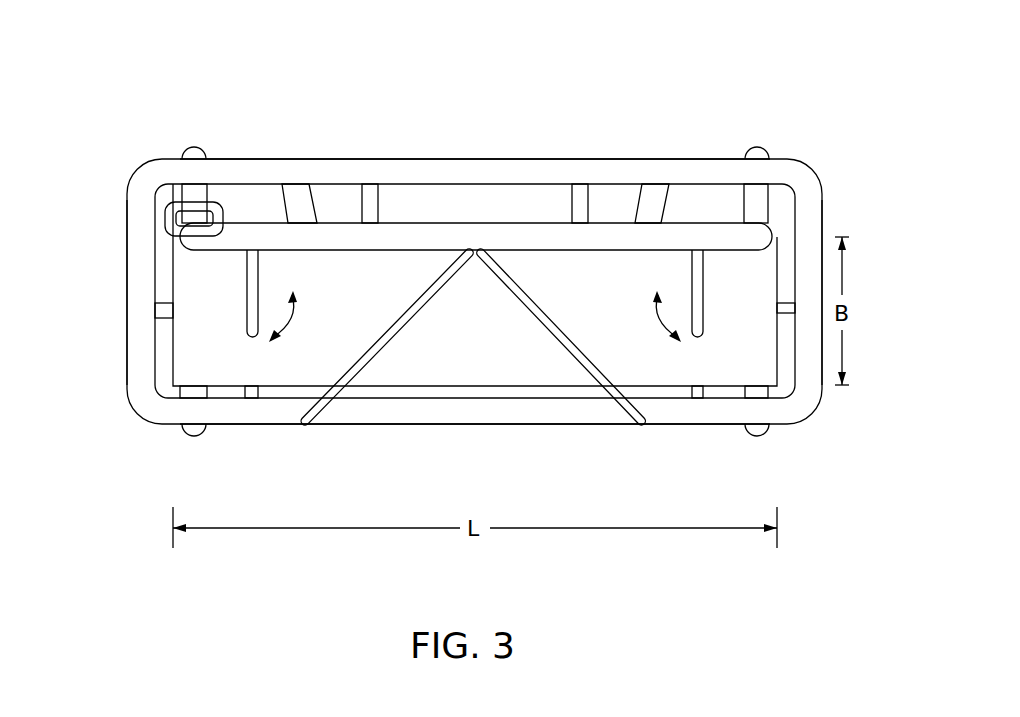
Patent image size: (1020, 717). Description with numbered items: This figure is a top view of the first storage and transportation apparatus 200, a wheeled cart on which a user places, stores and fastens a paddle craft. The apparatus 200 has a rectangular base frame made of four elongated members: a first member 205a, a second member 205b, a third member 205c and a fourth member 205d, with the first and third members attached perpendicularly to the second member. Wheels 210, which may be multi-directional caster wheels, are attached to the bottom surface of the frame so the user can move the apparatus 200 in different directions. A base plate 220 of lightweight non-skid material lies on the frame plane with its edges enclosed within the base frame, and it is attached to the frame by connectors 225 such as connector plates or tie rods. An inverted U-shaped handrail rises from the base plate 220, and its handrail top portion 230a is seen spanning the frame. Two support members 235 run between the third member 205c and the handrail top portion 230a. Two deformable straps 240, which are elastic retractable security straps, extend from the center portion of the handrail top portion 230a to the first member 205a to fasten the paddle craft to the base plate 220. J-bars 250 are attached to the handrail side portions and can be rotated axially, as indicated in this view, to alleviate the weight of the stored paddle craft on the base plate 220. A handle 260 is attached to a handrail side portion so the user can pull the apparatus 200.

The first storage and transportation apparatus 200 is at (140, 65).
The first member 205a is at (420, 424).
The second member 205b is at (822, 222).
The third member 205c is at (478, 158).
The fourth member 205d is at (127, 248).
The wheels 210 is at (191, 150).
The base plate 220 is at (192, 348).
The connectors 225 is at (367, 193).
The handrail top portion 230a is at (553, 233).
The support members 235 is at (297, 202).
The deformable straps 240 is at (365, 357).
The J-bars 250 is at (260, 266).
The handle 260 is at (167, 222).